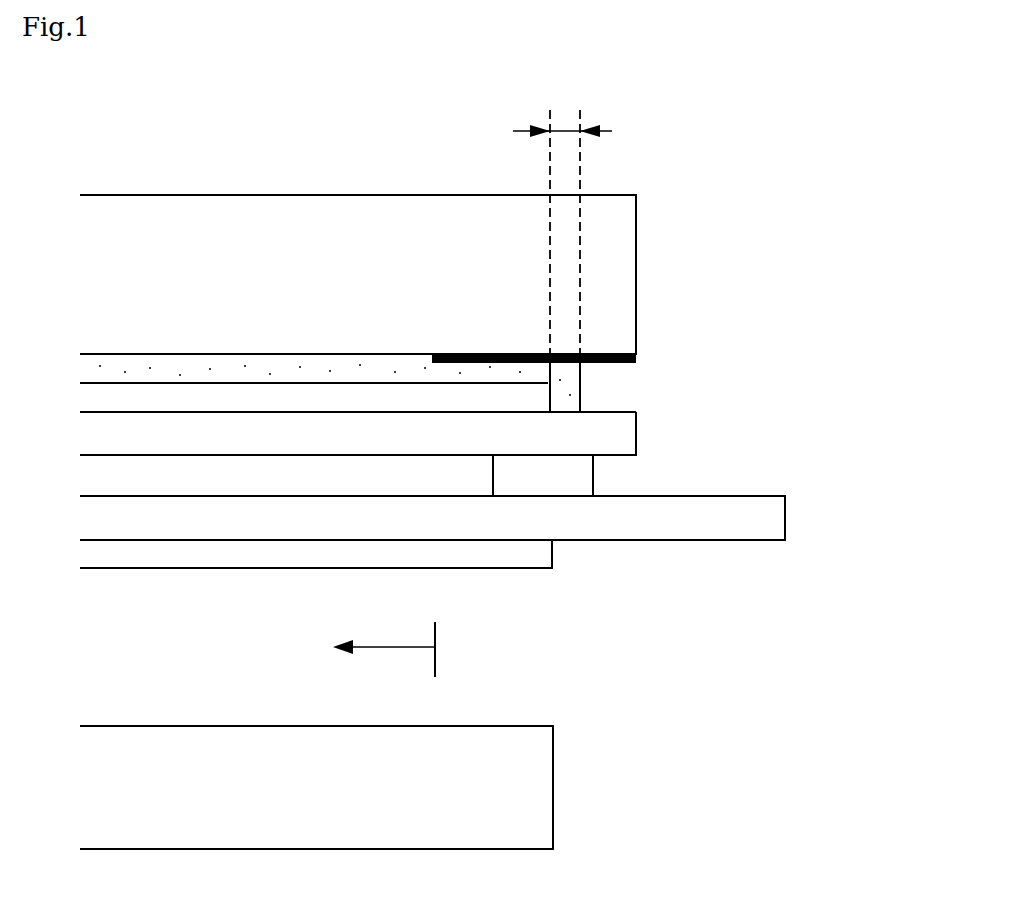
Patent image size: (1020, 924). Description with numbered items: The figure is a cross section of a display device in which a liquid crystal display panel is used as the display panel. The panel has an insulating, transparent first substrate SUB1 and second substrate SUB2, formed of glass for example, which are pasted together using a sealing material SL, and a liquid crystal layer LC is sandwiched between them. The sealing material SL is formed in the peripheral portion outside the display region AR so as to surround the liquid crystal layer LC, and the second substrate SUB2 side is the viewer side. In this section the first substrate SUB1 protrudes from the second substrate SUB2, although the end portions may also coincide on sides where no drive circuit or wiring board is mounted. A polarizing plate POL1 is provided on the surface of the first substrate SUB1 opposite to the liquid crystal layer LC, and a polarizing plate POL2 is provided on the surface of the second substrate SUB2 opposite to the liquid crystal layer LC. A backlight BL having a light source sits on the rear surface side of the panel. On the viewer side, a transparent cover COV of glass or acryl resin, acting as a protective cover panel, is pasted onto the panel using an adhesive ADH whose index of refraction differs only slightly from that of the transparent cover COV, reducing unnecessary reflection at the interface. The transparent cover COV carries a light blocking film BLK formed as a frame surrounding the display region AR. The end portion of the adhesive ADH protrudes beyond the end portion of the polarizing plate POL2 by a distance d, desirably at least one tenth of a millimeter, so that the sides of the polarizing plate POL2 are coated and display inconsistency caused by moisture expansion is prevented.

The transparent cover COV is at (603, 280).
The distance d is at (562, 214).
The light blocking film BLK is at (610, 353).
The adhesive ADH is at (212, 365).
The polarizing plate POL2 is at (310, 395).
The second substrate SUB2 is at (610, 429).
The sealing material SL is at (558, 487).
The liquid crystal layer LC is at (177, 485).
The first substrate SUB1 is at (730, 518).
The polarizing plate POL1 is at (497, 557).
The display region AR is at (354, 649).
The backlight BL is at (498, 812).